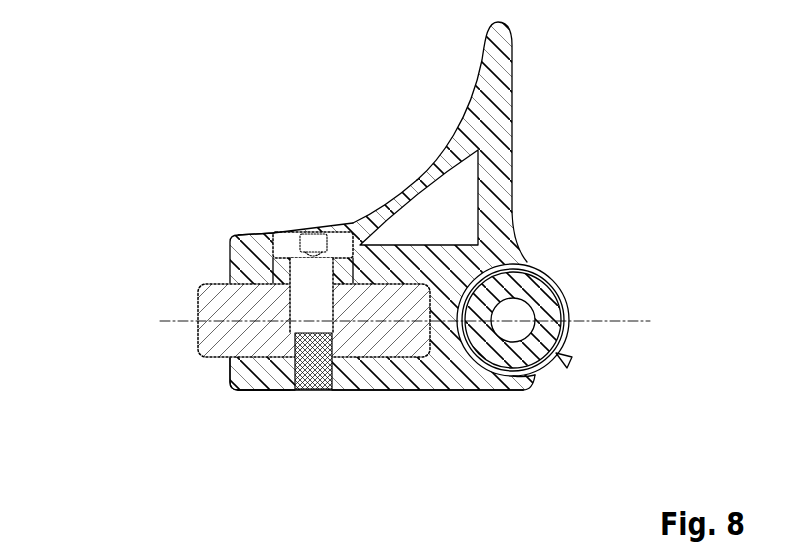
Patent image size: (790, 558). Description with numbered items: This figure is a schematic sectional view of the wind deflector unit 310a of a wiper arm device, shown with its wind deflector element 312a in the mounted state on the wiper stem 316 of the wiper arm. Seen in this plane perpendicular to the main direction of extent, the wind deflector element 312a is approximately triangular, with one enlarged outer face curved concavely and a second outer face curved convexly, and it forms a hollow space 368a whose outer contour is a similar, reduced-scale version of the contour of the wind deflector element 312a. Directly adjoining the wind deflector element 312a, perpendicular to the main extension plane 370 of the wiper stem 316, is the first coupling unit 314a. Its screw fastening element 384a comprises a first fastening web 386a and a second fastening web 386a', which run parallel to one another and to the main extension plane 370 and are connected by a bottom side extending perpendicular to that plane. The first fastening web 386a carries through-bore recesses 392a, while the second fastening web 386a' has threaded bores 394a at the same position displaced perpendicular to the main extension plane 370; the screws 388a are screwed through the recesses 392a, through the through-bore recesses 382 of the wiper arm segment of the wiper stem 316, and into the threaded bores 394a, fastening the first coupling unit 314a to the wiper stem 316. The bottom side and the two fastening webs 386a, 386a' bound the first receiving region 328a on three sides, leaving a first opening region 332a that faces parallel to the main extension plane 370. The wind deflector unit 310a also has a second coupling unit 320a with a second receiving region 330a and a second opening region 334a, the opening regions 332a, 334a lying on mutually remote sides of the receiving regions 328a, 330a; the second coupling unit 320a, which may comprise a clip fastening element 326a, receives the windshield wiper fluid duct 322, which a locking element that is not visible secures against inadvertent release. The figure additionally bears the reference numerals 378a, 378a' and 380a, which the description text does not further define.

The wind deflector unit 310a is at (113, 147).
The wind deflector element 312a is at (500, 100).
The first coupling unit 314a is at (250, 397).
The wiper stem 316 is at (222, 290).
The second coupling unit 320a is at (525, 403).
The windshield wiper fluid duct 322 is at (498, 368).
The clip fastening element 326a is at (548, 372).
The first receiving region 328a is at (380, 283).
The second receiving region 330a is at (523, 250).
The first opening region 332a is at (183, 273).
The second opening region 334a is at (597, 343).
The hollow space 368a is at (478, 177).
The main extension plane 370 is at (630, 322).
The clamp ring 378a is at (557, 292).
The clamp ring tab 378a' is at (610, 381).
The ring inner surface 380a is at (578, 312).
The recess 382 is at (293, 336).
The screw fastening element 384a is at (272, 388).
The first fastening web 386a is at (295, 187).
The second fastening web 386a' is at (427, 424).
The screw 388a is at (307, 303).
The recess 392a is at (275, 231).
The threaded bore 394a is at (287, 388).